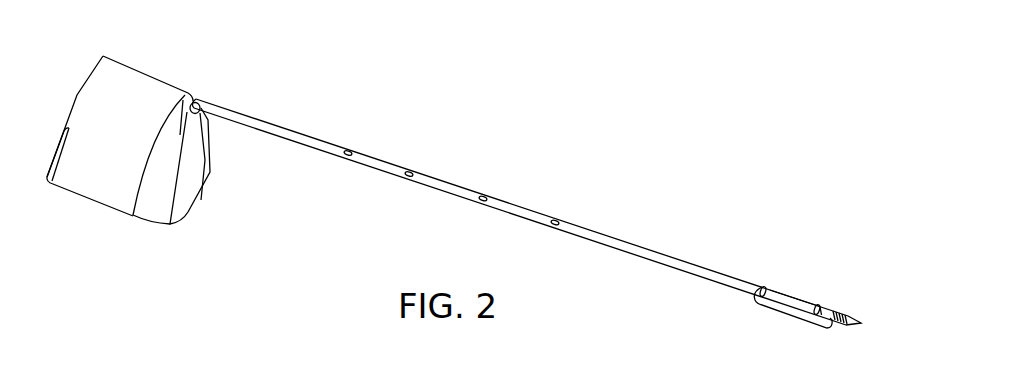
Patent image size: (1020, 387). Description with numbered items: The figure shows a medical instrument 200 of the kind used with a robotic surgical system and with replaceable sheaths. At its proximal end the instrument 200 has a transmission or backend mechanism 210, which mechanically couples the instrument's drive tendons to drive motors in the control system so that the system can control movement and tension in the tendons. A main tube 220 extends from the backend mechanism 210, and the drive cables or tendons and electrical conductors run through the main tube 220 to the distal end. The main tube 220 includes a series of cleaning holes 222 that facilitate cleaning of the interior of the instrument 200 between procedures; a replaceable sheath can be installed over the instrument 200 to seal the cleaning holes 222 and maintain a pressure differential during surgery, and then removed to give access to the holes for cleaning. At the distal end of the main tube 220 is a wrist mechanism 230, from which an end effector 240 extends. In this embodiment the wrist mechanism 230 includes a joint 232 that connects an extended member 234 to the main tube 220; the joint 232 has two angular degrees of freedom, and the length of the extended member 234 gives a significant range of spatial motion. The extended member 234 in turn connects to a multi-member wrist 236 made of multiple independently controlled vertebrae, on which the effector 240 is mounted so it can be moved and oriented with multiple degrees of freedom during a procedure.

The medical instrument 200 is at (668, 113).
The backend mechanism 210 is at (131, 146).
The main tube 220 is at (439, 185).
The cleaning holes 222 is at (349, 151).
The wrist mechanism 230 is at (789, 319).
The joint 232 is at (762, 287).
The extended member 234 is at (786, 292).
The multi-member wrist 236 is at (828, 303).
The end effector 240 is at (851, 313).